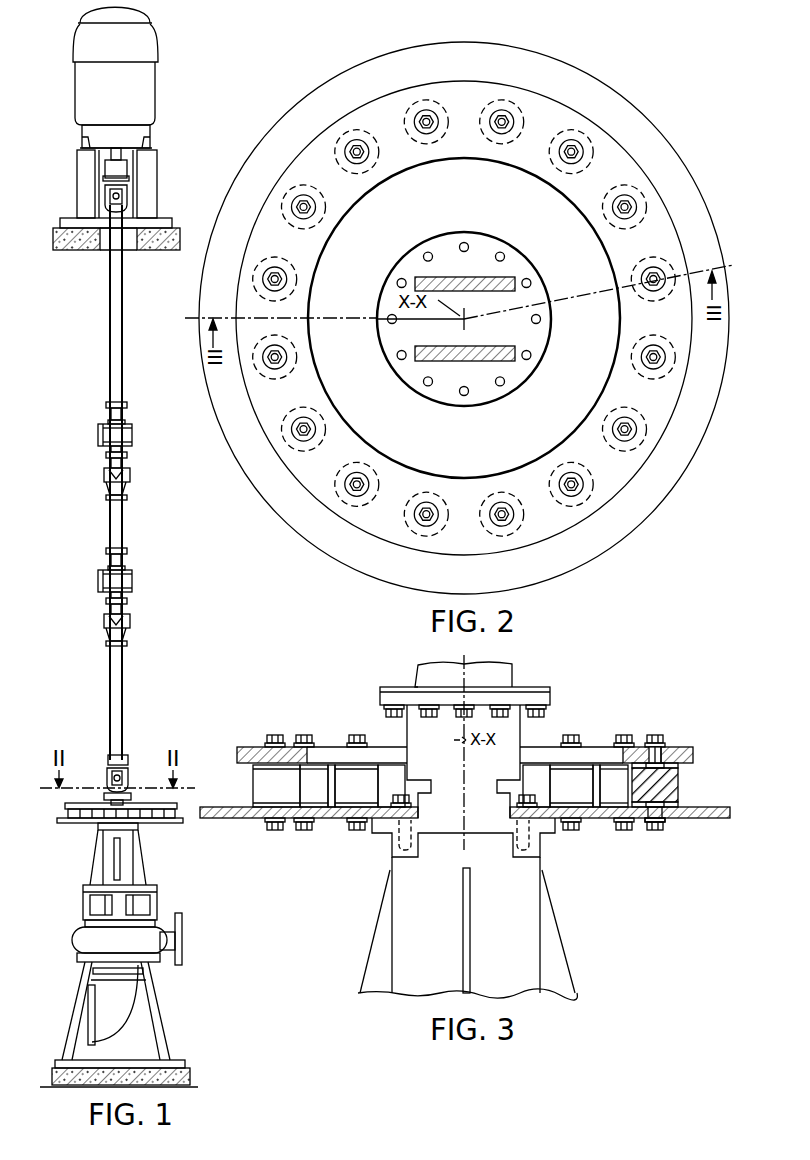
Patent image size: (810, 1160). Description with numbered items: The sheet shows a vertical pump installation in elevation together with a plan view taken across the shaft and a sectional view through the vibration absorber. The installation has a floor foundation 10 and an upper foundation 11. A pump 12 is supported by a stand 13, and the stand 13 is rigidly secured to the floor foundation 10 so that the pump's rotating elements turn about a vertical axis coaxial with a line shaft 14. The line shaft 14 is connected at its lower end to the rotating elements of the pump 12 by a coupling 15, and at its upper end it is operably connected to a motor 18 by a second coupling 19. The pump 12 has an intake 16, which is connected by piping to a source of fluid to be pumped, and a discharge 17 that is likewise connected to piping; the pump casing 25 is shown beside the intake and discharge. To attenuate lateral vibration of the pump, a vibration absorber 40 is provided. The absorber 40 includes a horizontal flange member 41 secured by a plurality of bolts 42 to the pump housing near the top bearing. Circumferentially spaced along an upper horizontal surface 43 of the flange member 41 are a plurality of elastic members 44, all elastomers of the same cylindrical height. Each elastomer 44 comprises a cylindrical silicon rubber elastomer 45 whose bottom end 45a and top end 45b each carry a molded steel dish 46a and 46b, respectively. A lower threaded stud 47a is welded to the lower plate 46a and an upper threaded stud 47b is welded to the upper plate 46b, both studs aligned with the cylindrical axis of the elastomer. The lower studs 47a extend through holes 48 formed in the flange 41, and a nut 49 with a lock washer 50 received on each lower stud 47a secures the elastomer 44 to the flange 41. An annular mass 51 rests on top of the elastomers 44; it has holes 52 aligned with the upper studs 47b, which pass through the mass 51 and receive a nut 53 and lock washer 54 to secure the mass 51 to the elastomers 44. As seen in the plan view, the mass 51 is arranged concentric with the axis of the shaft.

In FIG. 1, the floor foundation 10 is at (190, 1075).
In FIG. 1, the upper foundation 11 is at (53, 240).
In FIG. 1, the pump 12 is at (167, 905).
In FIG. 1, the stand 13 is at (160, 1000).
In FIG. 1, the line shaft 14 is at (110, 292).
In FIG. 1, the coupling 15 is at (128, 778).
In FIG. 1, the intake 16 is at (82, 998).
In FIG. 1, the discharge 17 is at (182, 940).
In FIG. 1, the motor 18 is at (150, 93).
In FIG. 1, the coupling 19 is at (128, 201).
In FIG. 1, the pump casing 25 is at (72, 938).
In FIG. 1, the vibration absorber 40 is at (72, 829).
In FIG. 2, the vibration absorber 40 is at (464, 328).
In FIG. 3, the vibration absorber 40 is at (465, 791).
In FIG. 2, the horizontal flange member 41 is at (350, 568).
In FIG. 3, the horizontal flange member 41 is at (465, 833).
In FIG. 3, the bolts 42 is at (303, 833).
In FIG. 2, the upper horizontal surface 43 is at (298, 520).
In FIG. 3, the upper horizontal surface 43 is at (240, 806).
In FIG. 2, the elastic members 44 is at (360, 178).
In FIG. 3, the elastic members 44 is at (470, 785).
In FIG. 3, the cylindrical silicon rubber elastomer 45 is at (680, 778).
In FIG. 3, the bottom end 45a is at (672, 807).
In FIG. 3, the top end 45b is at (670, 765).
In FIG. 3, the steel dish 46a is at (642, 806).
In FIG. 3, the steel dish 46b is at (640, 766).
In FIG. 3, the lower threaded stud 47a is at (656, 832).
In FIG. 3, the upper threaded stud 47b is at (656, 735).
In FIG. 3, the holes 48 is at (650, 810).
In FIG. 3, the nut 49 is at (660, 822).
In FIG. 3, the lock washer 50 is at (665, 818).
In FIG. 2, the annular mass 51 is at (532, 472).
In FIG. 3, the annular mass 51 is at (252, 747).
In FIG. 3, the holes 52 is at (649, 758).
In FIG. 3, the nut 53 is at (652, 752).
In FIG. 3, the lock washer 54 is at (663, 755).